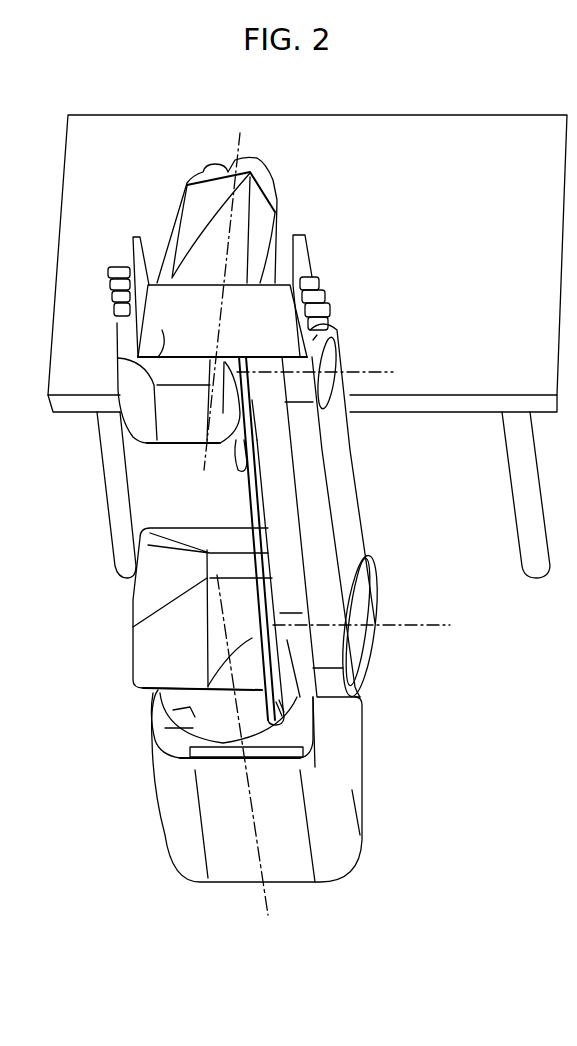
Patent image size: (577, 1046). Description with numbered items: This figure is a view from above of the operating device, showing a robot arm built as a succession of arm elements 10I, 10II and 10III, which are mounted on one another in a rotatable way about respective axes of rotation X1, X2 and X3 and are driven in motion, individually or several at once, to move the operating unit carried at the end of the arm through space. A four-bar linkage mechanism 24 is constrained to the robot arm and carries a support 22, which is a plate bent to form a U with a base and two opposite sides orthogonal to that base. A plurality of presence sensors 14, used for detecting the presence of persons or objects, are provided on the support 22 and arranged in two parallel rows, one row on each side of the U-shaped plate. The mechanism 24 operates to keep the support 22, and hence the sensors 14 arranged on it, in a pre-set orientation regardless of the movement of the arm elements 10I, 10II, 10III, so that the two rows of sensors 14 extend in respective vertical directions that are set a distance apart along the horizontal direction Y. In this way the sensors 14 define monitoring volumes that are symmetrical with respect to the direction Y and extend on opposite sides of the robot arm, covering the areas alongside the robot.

The arm element 10I is at (153, 655).
The arm element 10II is at (342, 492).
The arm element 10III is at (143, 412).
The presence sensor 14 is at (113, 300).
The support 22 is at (263, 303).
The four-bar linkage mechanism 24 is at (240, 510).
The axis of rotation X1 is at (267, 895).
The axis of rotation X2 is at (410, 625).
The axis of rotation X3 is at (365, 372).
The horizontal direction Y is at (235, 137).